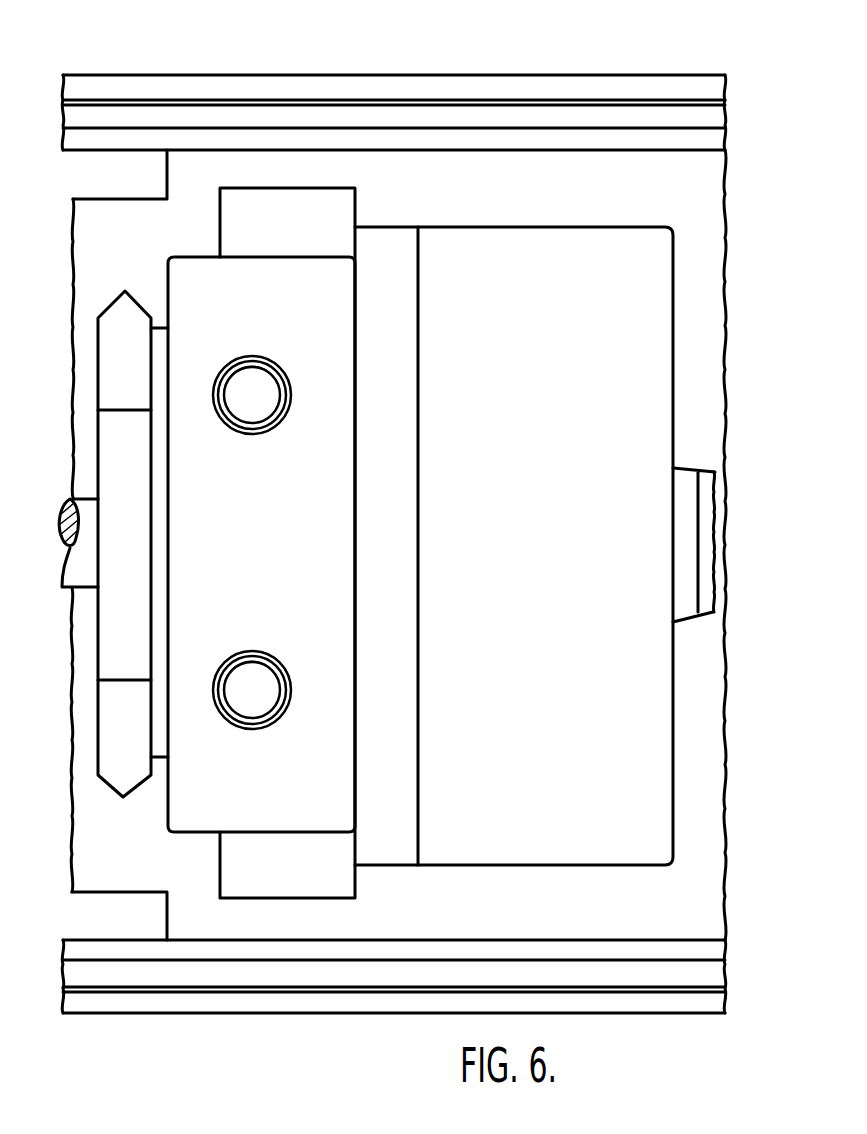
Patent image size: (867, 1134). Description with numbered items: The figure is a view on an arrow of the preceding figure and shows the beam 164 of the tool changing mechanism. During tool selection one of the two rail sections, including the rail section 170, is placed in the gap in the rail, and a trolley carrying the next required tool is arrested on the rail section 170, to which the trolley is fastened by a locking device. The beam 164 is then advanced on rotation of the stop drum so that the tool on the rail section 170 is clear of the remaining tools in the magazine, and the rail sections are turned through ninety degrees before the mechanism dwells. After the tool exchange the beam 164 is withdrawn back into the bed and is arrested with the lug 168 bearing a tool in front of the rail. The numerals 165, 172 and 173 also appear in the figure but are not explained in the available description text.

The beam 164 is at (690, 697).
The housing wall 165 is at (458, 88).
The lug 168 is at (295, 798).
The rail section 170 is at (130, 625).
The seal ring 172 is at (85, 532).
The block portion 173 is at (532, 252).